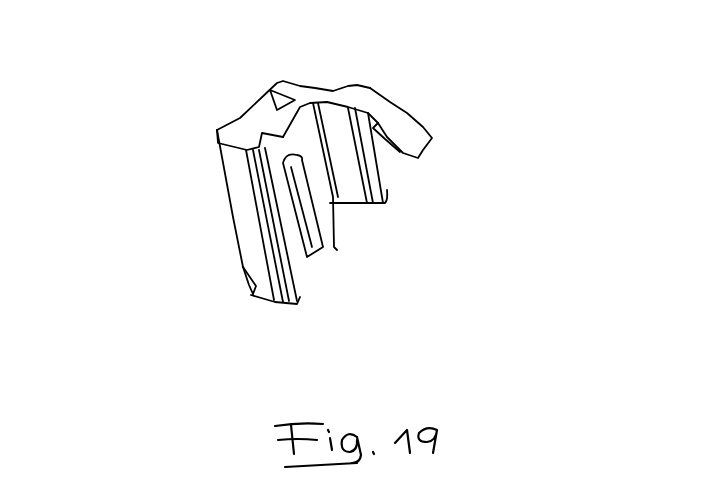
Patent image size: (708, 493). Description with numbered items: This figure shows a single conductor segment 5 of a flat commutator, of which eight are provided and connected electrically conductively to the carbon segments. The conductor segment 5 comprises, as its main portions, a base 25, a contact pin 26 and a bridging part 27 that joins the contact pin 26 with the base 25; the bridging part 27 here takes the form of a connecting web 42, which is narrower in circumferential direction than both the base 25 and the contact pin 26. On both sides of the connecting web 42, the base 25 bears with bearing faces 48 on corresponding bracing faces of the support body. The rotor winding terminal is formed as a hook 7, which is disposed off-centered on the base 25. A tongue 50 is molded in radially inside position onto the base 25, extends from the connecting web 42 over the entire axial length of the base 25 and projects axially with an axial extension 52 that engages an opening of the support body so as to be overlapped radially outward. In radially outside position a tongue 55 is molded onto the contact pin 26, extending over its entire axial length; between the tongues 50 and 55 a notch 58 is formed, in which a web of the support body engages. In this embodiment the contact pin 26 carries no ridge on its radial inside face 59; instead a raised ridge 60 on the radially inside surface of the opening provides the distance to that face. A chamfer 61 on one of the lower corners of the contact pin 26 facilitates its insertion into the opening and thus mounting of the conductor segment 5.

The conductor segment 5 is at (298, 196).
The raised ridge 60 is at (57, 13).
The connecting web 42 is at (283, 137).
The bridging part 27 is at (265, 108).
The base 25 is at (313, 85).
The bearing faces 48 is at (340, 138).
The hook 7 is at (428, 134).
The tongue 50 is at (318, 186).
The axial extension 52 is at (337, 248).
The tongue 55 is at (288, 204).
The notch 58 is at (310, 258).
The radial inside face 59 is at (224, 166).
The chamfer 61 is at (247, 300).
The contact pin 26 is at (283, 303).